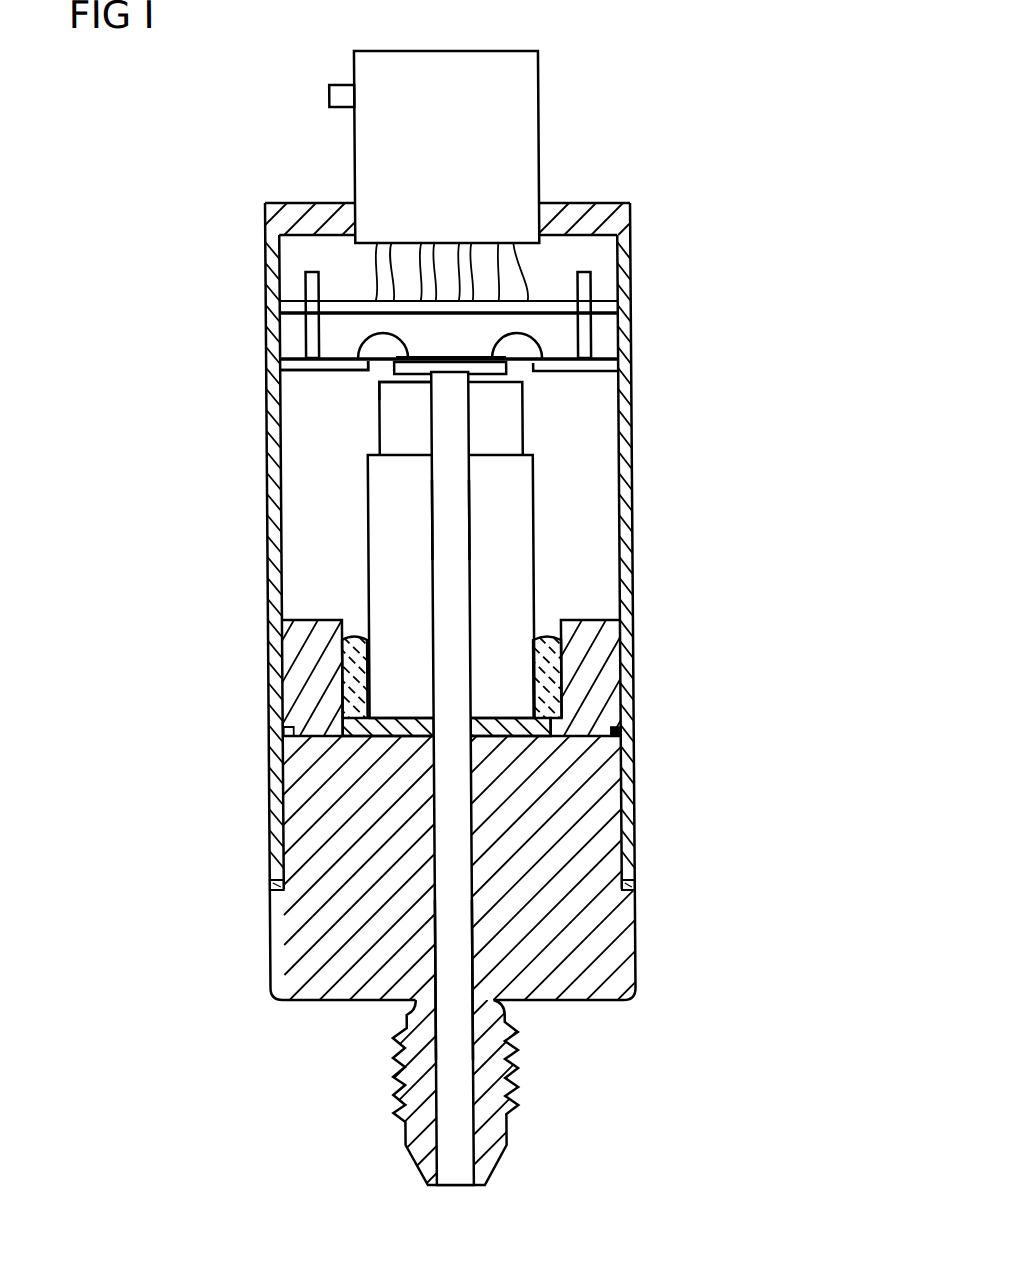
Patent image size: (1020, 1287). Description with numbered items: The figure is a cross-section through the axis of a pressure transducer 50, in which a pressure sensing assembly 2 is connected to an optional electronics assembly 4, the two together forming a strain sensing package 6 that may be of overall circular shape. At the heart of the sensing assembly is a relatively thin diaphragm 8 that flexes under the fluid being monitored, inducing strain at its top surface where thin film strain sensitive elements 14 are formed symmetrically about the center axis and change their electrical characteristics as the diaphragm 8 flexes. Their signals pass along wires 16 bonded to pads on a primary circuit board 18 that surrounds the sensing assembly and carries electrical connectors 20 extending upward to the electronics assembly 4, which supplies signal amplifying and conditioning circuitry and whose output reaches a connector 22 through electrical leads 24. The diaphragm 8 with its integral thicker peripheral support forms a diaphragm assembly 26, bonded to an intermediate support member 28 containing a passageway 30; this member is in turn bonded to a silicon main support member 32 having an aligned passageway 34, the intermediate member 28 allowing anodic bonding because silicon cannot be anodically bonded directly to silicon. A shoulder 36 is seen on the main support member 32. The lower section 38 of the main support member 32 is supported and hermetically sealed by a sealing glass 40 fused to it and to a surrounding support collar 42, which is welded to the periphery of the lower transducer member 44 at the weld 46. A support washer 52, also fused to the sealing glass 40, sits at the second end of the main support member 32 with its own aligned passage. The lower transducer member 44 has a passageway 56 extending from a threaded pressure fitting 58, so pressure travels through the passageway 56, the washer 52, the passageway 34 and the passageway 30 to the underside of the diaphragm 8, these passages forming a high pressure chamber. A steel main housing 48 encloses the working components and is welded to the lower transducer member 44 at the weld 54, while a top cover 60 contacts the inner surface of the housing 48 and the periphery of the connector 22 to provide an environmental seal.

The pressure sensing assembly 2 is at (335, 387).
The electronics assembly 4 is at (297, 308).
The strain sensing package 6 is at (643, 297).
The diaphragm 8 is at (485, 373).
The strain sensitive elements 14 is at (462, 351).
The wires 16 is at (360, 342).
The primary circuit board 18 is at (597, 366).
The electrical connectors 20 is at (583, 282).
The connector 22 is at (505, 105).
The electrical leads 24 is at (528, 270).
The diaphragm assembly 26 is at (352, 393).
The intermediate support member 28 is at (398, 428).
The passageway 30 is at (470, 422).
The main support member 32 is at (385, 560).
The passageway 34 is at (472, 516).
The right column shoulder 36 is at (510, 472).
The lower section 38 is at (518, 668).
The sealing glass 40 is at (353, 688).
The support collar 42 is at (592, 647).
The lower transducer member 44 is at (603, 926).
The weld 46 is at (280, 733).
The main housing 48 is at (620, 425).
The pressure transducer 50 is at (797, 378).
The support washer 52 is at (541, 718).
The weld 54 is at (268, 883).
The passageway 56 is at (446, 955).
The pressure fitting 58 is at (486, 1082).
The top cover 60 is at (323, 217).